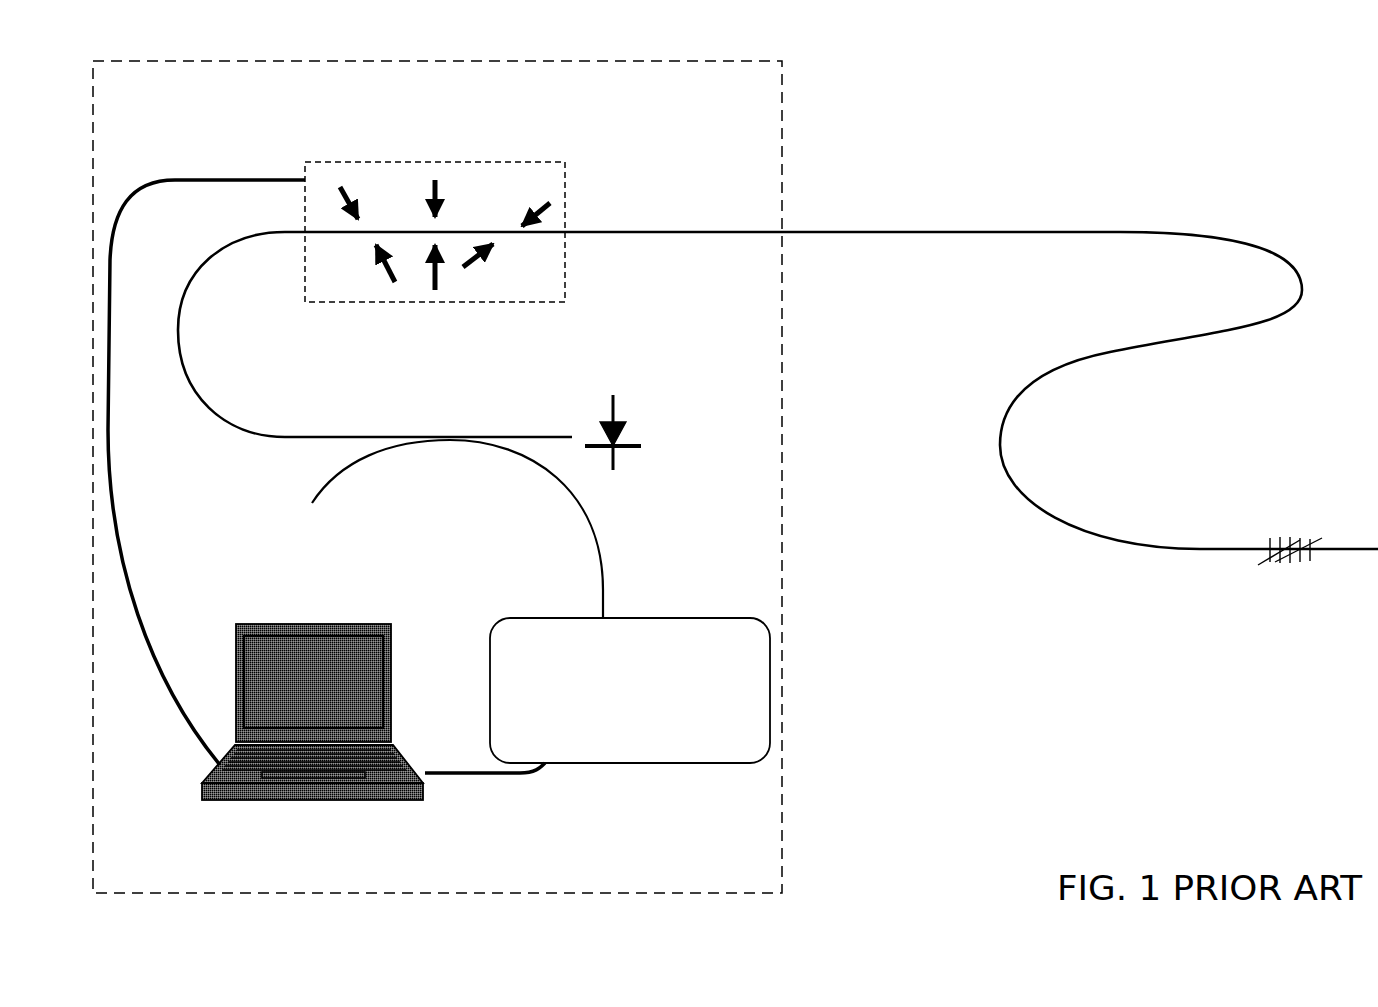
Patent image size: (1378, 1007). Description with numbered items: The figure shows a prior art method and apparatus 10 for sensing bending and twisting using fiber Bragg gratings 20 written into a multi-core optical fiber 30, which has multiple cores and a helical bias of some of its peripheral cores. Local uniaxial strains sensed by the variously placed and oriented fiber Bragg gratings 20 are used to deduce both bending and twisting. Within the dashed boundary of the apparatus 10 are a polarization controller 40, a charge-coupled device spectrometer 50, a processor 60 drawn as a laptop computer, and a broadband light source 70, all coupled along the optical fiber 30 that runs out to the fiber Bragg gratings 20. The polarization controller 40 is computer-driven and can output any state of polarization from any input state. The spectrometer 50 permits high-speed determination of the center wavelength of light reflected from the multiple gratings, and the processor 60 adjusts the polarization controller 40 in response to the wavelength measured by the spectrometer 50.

The prior art method and apparatus 10 is at (782, 143).
The fiber Bragg gratings 20 is at (1285, 565).
The multi-core optical fiber 30 is at (1122, 232).
The polarization controller 40 is at (565, 165).
The CCD spectrometer 50 is at (745, 658).
The processor 60 is at (425, 788).
The broadband light source 70 is at (660, 460).